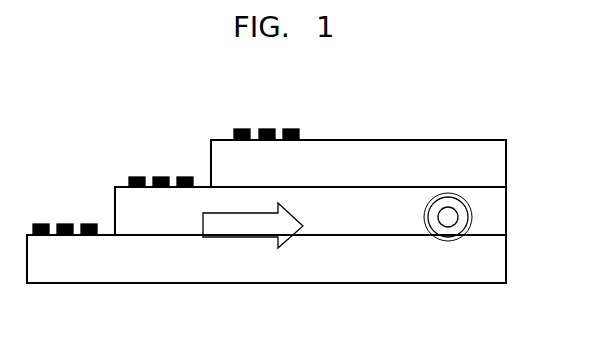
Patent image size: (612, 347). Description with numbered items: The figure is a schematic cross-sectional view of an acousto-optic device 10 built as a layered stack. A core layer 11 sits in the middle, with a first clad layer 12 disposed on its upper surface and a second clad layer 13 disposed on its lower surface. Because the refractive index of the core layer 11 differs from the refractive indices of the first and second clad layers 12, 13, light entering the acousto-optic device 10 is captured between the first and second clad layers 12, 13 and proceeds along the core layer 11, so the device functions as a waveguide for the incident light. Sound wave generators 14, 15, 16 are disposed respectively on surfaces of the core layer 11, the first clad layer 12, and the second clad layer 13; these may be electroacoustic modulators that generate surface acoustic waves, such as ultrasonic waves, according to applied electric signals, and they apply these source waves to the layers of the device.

The acousto-optic device 10 is at (278, 313).
The core layer 11 is at (506, 212).
The first clad layer 12 is at (506, 163).
The second clad layer 13 is at (506, 258).
The sound wave generator 14 is at (158, 172).
The sound wave generator 15 is at (263, 118).
The sound wave generator 16 is at (63, 217).